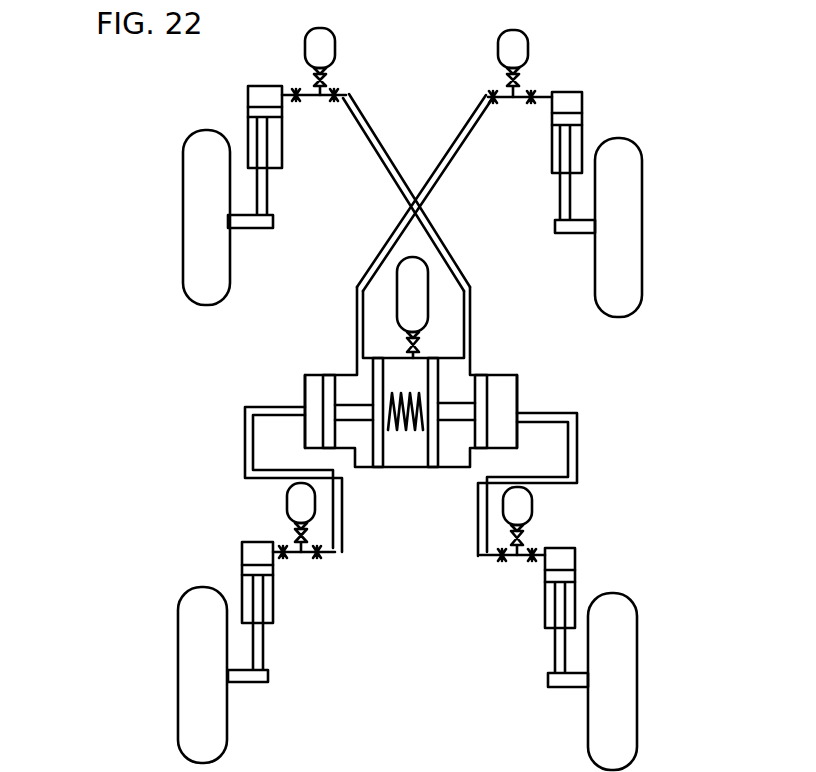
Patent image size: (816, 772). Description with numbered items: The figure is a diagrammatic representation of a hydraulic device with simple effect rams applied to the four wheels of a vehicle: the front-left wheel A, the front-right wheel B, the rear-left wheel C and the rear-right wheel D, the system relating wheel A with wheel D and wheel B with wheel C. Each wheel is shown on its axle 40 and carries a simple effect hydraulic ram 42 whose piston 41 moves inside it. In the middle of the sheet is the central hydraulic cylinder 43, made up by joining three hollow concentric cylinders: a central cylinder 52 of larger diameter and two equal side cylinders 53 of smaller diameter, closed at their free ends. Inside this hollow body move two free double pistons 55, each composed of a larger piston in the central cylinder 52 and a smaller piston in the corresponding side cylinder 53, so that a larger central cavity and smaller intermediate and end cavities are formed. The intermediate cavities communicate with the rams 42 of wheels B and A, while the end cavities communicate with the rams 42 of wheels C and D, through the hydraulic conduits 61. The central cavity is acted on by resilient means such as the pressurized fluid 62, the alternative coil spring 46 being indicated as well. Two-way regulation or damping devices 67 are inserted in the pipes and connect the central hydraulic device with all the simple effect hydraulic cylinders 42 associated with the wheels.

The axle / wheel support 40 is at (268, 205).
The piston 41 is at (257, 117).
The simple effect hydraulic ram 42 is at (248, 104).
The central hydraulic cylinder 43 is at (535, 388).
The coil spring 46 is at (405, 440).
The central cylinder 52 is at (453, 472).
The side cylinder 53 is at (312, 395).
The double piston 55 is at (330, 386).
The hydraulic conduit 61 is at (357, 296).
The pressurized fluid 62 is at (412, 310).
The two-way regulation or damping device 67 is at (324, 43).
The front-left wheel A is at (197, 215).
The front-right wheel B is at (632, 198).
The rear-left wheel C is at (200, 640).
The rear-right wheel D is at (627, 660).